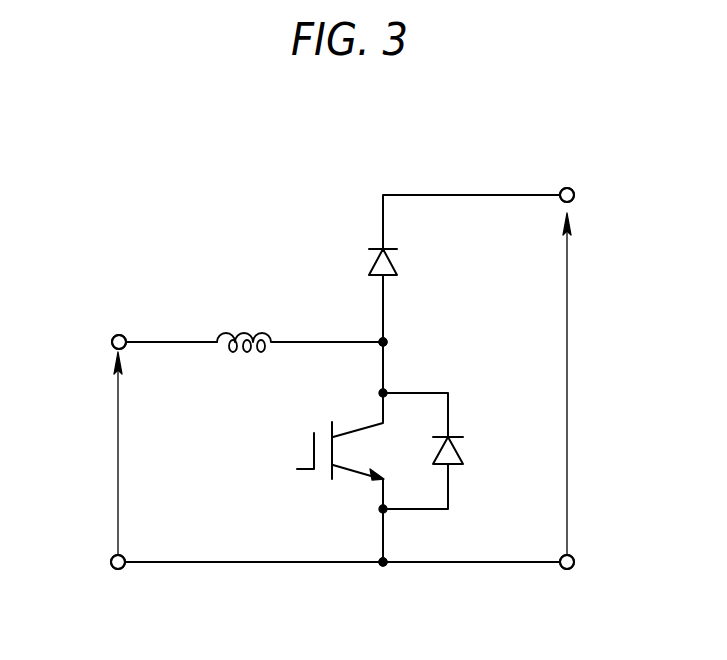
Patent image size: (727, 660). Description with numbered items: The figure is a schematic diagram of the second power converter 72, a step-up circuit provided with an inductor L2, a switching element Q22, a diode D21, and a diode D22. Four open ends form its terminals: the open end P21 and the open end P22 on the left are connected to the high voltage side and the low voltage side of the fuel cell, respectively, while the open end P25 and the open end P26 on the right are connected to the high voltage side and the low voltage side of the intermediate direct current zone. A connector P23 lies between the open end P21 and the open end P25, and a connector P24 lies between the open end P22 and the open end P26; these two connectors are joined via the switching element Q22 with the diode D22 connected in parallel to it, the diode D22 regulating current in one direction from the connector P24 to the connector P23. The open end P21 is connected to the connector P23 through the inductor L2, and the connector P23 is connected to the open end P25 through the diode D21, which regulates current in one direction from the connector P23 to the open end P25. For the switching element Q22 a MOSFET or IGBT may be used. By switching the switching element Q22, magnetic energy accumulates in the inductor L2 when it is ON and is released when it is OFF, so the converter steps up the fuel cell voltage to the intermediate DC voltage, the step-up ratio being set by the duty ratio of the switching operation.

The second power converter 72 is at (558, 157).
The inductor L2 is at (250, 328).
The diode D21 is at (395, 258).
The diode D22 is at (460, 448).
The switching element Q22 is at (310, 448).
The open end P21 is at (110, 343).
The open end P22 is at (110, 563).
The connector P23 is at (390, 342).
The connector P24 is at (383, 570).
The open end P25 is at (575, 195).
The open end P26 is at (575, 562).